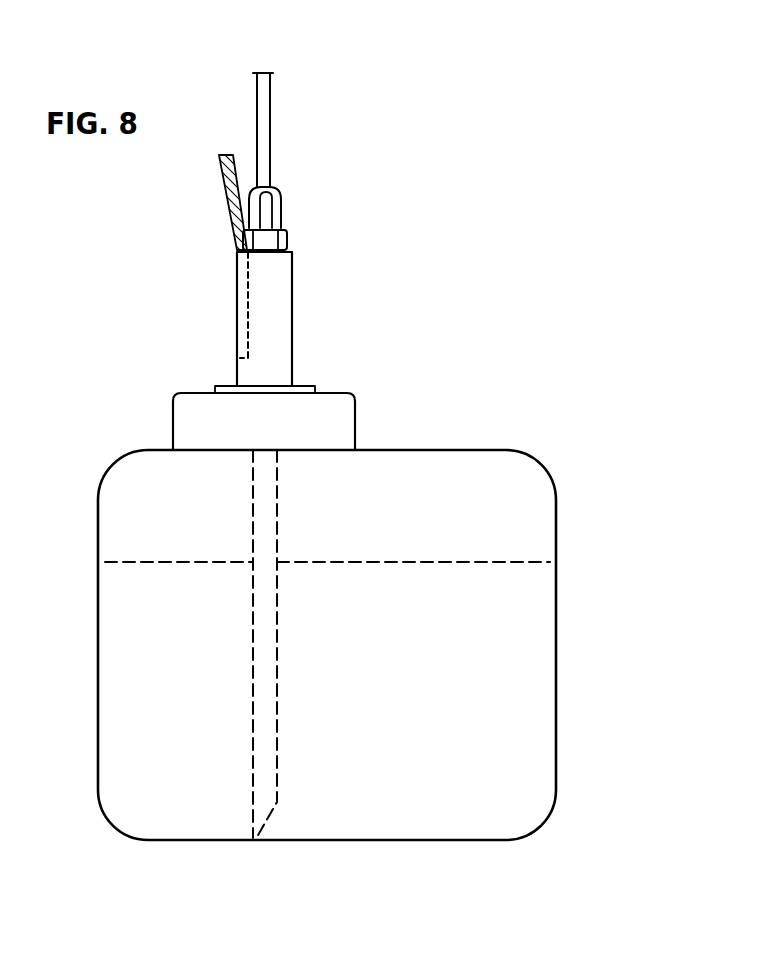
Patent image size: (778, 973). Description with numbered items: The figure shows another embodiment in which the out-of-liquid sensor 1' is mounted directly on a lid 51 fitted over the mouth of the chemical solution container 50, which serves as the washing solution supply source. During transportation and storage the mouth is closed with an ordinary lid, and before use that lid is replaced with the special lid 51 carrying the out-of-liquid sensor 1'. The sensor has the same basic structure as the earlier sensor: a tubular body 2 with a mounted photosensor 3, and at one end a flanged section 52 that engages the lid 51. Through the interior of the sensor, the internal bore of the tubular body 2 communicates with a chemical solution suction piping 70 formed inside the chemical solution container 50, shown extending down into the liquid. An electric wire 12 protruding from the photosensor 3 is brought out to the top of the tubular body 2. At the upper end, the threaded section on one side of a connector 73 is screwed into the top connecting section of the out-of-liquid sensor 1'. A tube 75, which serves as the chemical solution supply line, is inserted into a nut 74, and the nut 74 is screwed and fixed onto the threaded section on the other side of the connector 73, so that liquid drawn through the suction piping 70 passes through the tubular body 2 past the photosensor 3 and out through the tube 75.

The out-of-liquid sensor 1' is at (357, 277).
The tubular body 2 is at (293, 326).
The photosensor 3 is at (237, 295).
The electric wire 12 is at (232, 190).
The chemical solution container 50 is at (540, 656).
The lid 51 is at (355, 420).
The flanged section 52 is at (313, 386).
The chemical solution suction piping 70 is at (253, 673).
The connector 73 is at (287, 238).
The nut 74 is at (277, 203).
The tube 75 is at (270, 117).